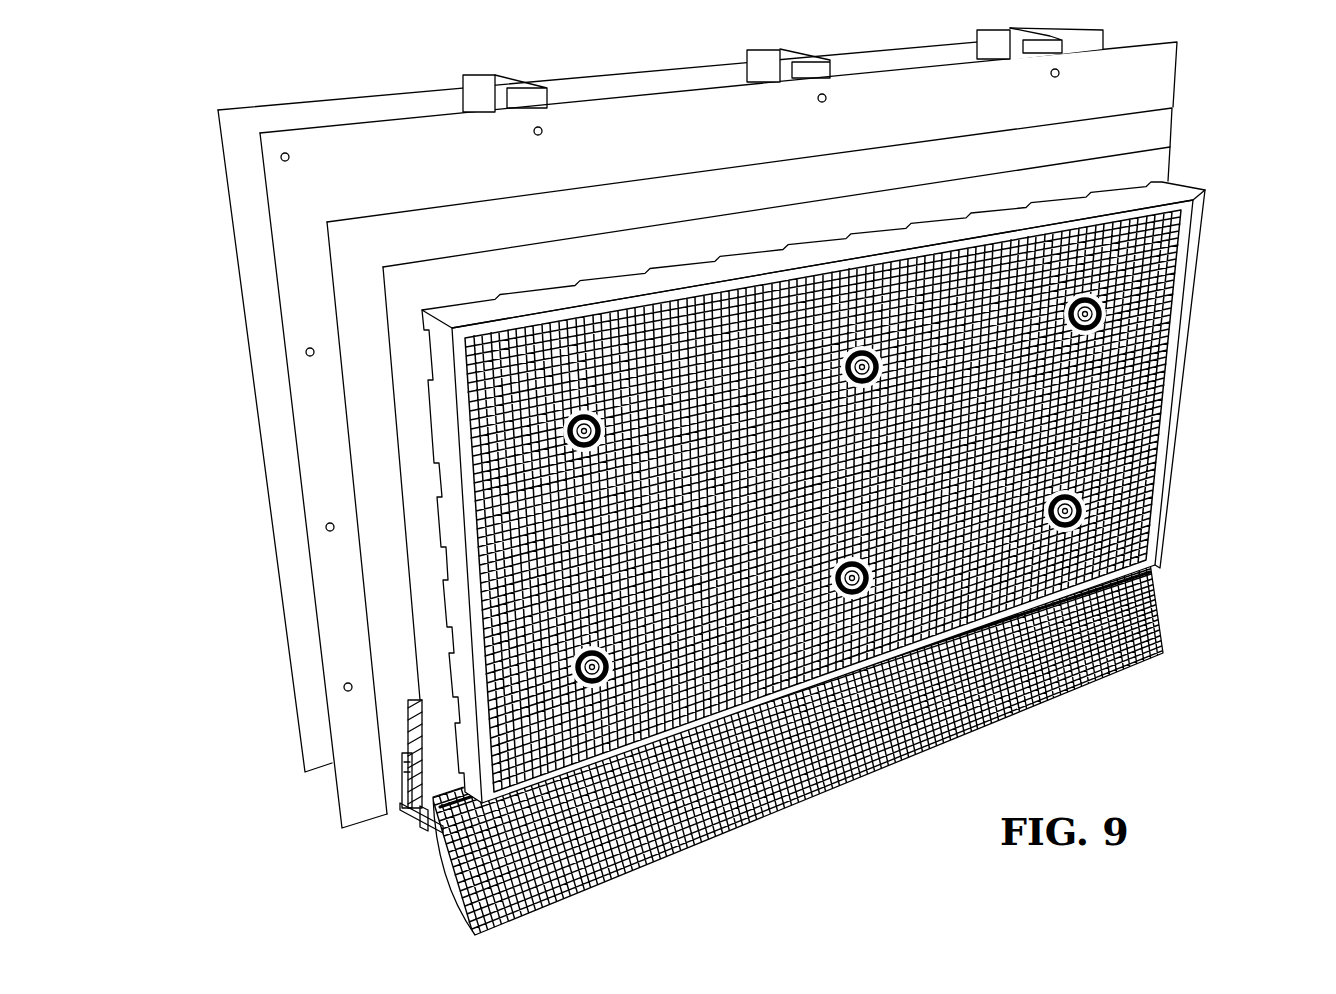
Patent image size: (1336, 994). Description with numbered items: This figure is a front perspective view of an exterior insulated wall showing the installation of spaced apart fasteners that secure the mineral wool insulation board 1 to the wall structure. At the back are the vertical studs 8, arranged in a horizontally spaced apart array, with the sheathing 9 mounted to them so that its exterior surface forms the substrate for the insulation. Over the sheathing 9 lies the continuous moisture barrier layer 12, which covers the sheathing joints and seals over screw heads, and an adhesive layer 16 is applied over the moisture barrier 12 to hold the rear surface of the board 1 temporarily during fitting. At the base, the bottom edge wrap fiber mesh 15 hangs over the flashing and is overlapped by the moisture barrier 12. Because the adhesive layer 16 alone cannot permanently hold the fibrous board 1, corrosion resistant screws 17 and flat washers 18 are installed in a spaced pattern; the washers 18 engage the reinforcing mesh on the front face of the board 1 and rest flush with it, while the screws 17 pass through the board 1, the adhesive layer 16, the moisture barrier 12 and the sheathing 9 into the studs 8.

The mineral wool insulation board 1 is at (1180, 436).
The vertical stud 8 is at (483, 86).
The sheathing 9 is at (1158, 75).
The moisture barrier layer 12 is at (1158, 128).
The bottom edge wrap fiber mesh 15 is at (1158, 612).
The adhesive layer 16 is at (1158, 163).
The screw 17 is at (578, 420).
The washer 18 is at (755, 490).